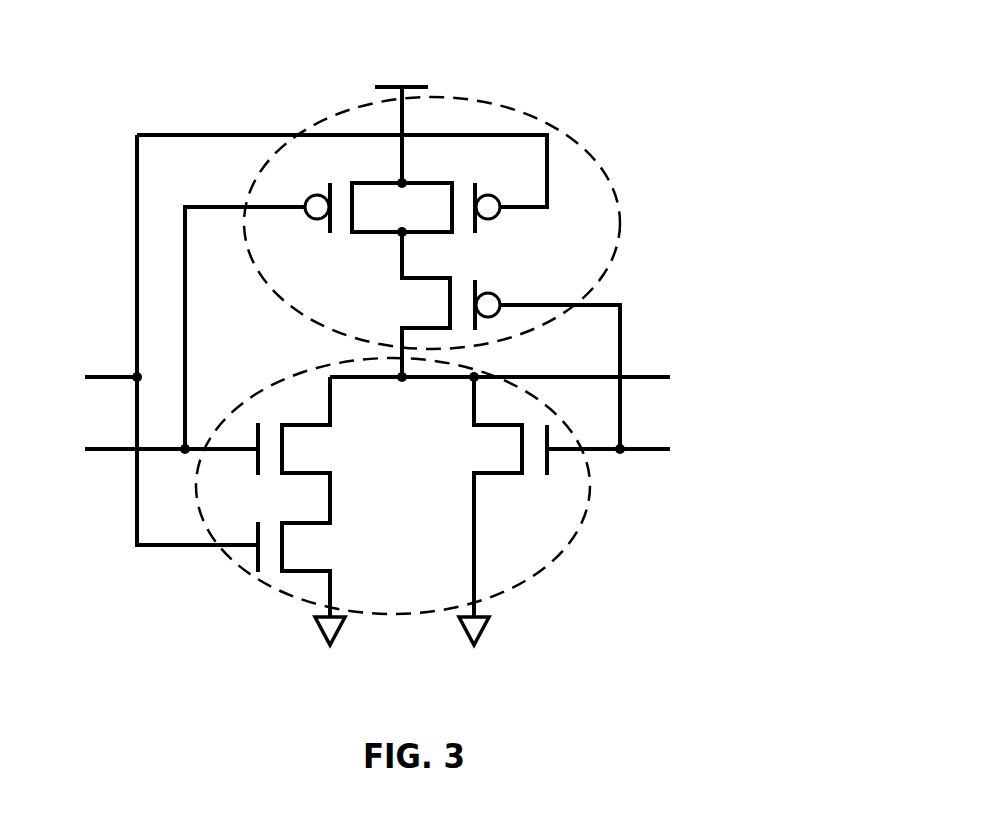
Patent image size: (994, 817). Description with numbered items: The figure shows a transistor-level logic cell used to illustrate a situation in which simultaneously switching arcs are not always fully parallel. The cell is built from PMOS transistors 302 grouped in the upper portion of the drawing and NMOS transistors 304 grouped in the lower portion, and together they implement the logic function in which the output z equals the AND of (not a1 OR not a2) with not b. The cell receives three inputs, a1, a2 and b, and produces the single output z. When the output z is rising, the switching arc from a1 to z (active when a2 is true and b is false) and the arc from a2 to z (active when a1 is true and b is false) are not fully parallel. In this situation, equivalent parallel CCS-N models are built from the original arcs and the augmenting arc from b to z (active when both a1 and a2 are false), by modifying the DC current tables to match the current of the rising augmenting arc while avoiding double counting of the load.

The PMOS transistors 302 is at (563, 136).
The NMOS transistors 304 is at (575, 540).
The input a1 is at (96, 377).
The input a2 is at (154, 449).
The output z is at (509, 377).
The input b is at (619, 452).